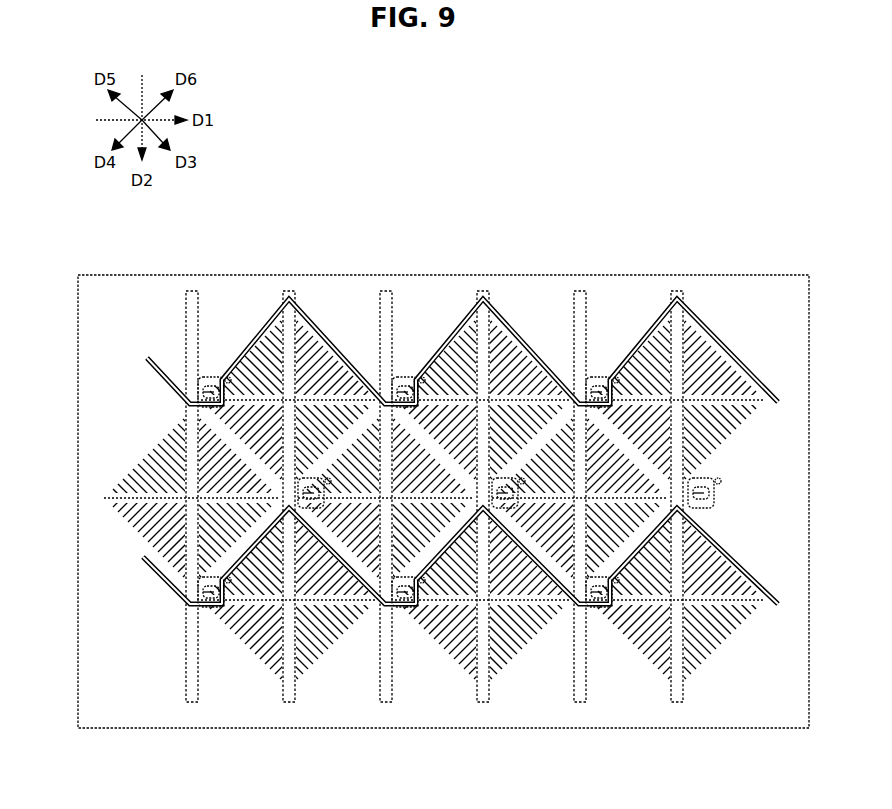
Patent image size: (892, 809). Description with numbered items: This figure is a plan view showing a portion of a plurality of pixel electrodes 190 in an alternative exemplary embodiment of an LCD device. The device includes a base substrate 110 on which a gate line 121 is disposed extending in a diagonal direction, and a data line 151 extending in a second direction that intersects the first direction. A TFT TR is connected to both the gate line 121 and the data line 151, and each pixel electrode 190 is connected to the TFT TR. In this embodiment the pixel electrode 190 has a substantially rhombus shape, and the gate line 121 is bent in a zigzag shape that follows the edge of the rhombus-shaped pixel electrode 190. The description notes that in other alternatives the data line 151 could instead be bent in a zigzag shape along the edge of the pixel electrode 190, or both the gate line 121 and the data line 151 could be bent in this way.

The base substrate 110 is at (432, 275).
The gate line 121 is at (147, 357).
The data line 151 is at (191, 290).
The pixel electrode 190 is at (329, 328).
The TFT TR is at (214, 364).